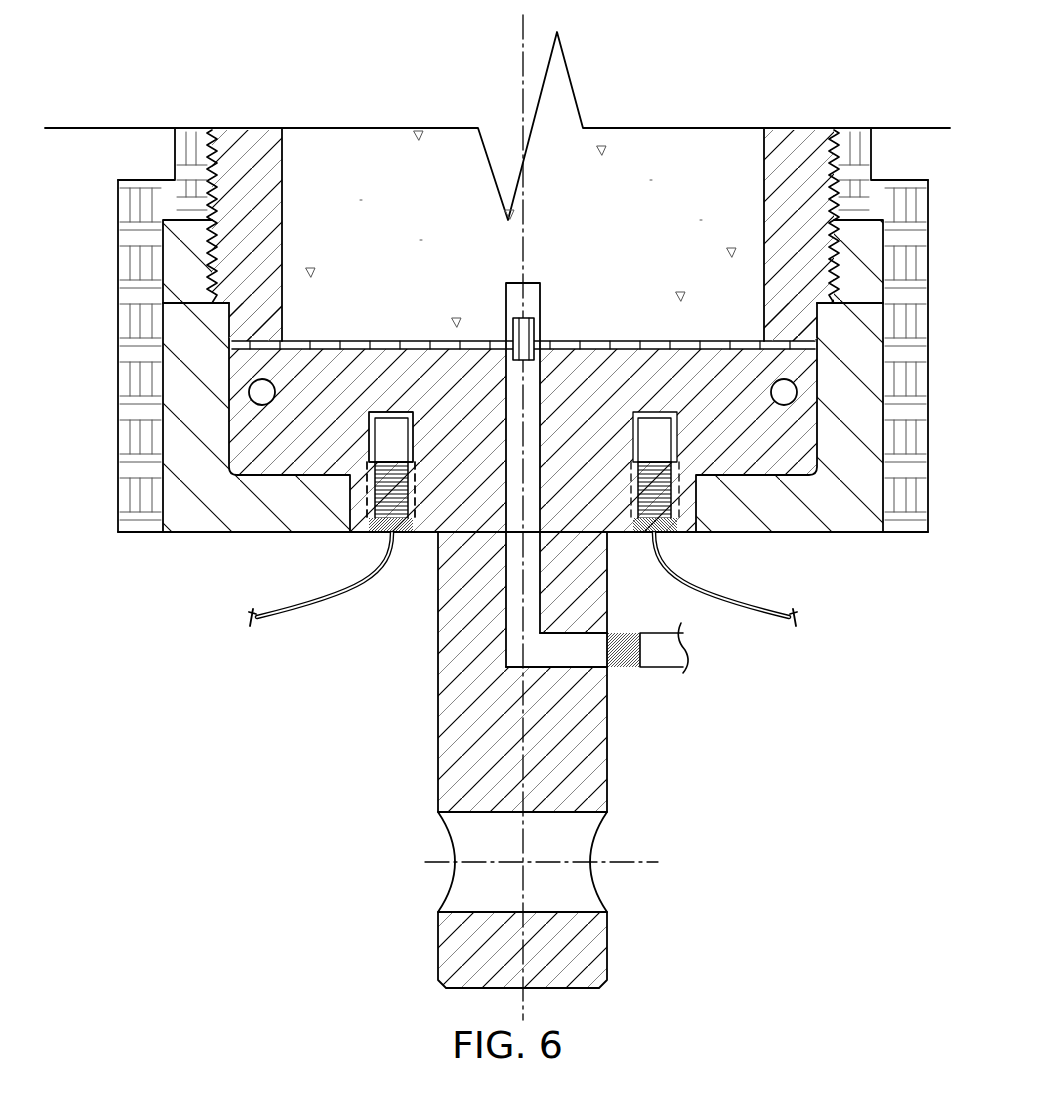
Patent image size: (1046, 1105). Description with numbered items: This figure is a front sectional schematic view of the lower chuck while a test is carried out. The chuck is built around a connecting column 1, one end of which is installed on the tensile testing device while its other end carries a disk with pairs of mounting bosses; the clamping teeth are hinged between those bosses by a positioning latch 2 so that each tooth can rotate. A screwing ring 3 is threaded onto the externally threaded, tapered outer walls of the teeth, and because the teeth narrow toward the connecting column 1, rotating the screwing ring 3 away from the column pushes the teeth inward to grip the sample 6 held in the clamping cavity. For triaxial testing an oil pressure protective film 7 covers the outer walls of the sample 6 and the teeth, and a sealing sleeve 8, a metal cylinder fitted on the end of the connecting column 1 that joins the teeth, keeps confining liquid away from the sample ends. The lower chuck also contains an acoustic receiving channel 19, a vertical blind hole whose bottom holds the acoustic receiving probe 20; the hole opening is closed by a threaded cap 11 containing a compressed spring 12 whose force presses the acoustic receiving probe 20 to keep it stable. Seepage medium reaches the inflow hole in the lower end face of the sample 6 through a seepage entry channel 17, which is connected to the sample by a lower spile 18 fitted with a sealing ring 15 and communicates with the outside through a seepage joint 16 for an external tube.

The connecting column 1 is at (463, 602).
The positioning latch 2 is at (258, 393).
The screwing ring 3 is at (188, 277).
The sample 6 is at (417, 163).
The oil pressure protective film 7 is at (147, 483).
The sealing sleeve 8 is at (270, 510).
The threaded cap 11 is at (367, 534).
The spring 12 is at (403, 490).
The sealing ring 15 is at (543, 345).
The seepage joint 16 is at (640, 653).
The seepage entry channel 17 is at (568, 652).
The lower spile 18 is at (531, 320).
The acoustic receiving channel 19 is at (372, 452).
The acoustic receiving probe 20 is at (397, 440).